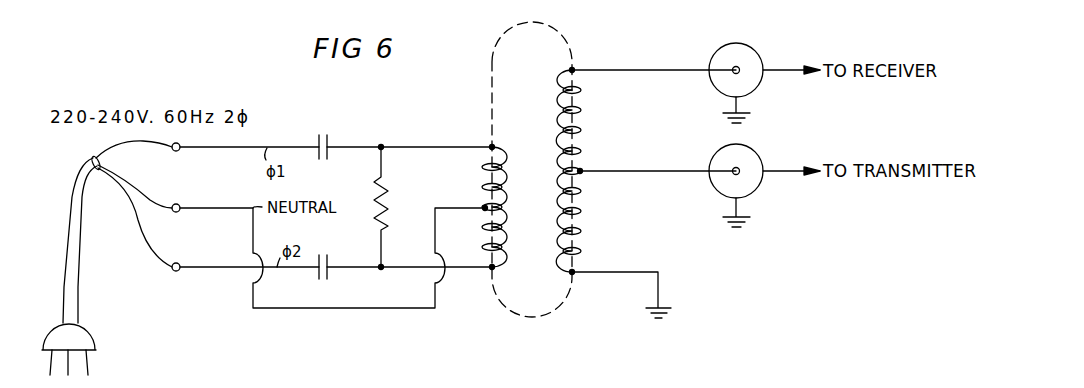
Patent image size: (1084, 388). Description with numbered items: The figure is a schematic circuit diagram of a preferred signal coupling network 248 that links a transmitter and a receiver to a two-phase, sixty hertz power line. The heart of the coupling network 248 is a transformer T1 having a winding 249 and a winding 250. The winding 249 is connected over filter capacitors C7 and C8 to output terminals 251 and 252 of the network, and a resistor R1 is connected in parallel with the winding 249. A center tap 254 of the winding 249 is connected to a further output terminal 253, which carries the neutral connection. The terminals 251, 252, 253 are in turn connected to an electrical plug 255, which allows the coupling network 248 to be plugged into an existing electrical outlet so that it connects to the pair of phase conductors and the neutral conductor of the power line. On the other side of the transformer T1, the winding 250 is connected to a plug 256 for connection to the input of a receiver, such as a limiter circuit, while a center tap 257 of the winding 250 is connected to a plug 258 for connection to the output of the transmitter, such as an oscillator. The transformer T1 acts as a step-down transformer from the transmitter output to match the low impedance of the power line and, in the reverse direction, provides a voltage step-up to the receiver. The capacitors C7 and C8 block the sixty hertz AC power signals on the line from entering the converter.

The coupling network 248 is at (490, 348).
The winding 249 is at (503, 167).
The winding 250 is at (579, 113).
The output terminal 251 is at (174, 152).
The output terminal 252 is at (174, 213).
The further output terminal 253 is at (174, 272).
The center tap 254 is at (448, 208).
The electrical plug 255 is at (95, 337).
The plug 256 is at (757, 57).
The center tap 257 is at (580, 192).
The plug 258 is at (757, 160).
The filter capacitor C7 is at (330, 136).
The filter capacitor C8 is at (337, 260).
The resistor R1 is at (390, 207).
The transformer T1 is at (577, 63).